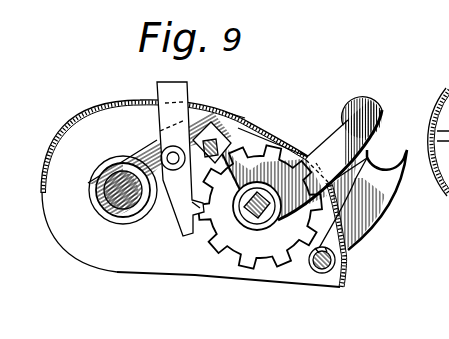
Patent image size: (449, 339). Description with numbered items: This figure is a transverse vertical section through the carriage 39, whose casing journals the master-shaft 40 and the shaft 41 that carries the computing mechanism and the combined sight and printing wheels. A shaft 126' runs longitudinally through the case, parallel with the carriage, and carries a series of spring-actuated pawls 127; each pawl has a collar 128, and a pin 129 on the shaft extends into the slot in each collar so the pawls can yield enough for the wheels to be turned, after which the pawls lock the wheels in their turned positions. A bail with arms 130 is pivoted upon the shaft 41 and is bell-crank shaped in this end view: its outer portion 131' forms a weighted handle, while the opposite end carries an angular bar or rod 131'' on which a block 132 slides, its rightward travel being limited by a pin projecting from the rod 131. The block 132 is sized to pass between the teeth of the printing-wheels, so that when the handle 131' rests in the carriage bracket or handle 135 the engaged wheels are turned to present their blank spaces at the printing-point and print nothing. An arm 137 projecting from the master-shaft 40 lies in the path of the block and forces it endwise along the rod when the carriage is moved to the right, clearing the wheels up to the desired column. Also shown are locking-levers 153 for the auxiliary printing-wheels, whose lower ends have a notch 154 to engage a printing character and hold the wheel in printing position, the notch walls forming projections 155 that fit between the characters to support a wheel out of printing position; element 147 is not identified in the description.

The carriage 39 is at (194, 193).
The master-shaft 40 is at (125, 198).
The shaft 41 is at (258, 207).
The shaft 126' is at (324, 284).
The spring-actuated pawl 127 is at (292, 268).
The collar 128 is at (336, 258).
The pin 129 is at (336, 222).
The bail arm 130 is at (228, 163).
The rod 131 is at (325, 162).
The handle 131' is at (383, 120).
The angular bar or rod 131'' is at (258, 129).
The block 132 is at (240, 92).
The carriage bracket or handle 135 is at (398, 182).
The arm 137 is at (137, 154).
The block 147 is at (208, 128).
The locking-lever 153 is at (162, 90).
The notch 154 is at (197, 180).
The projection 155 is at (208, 209).